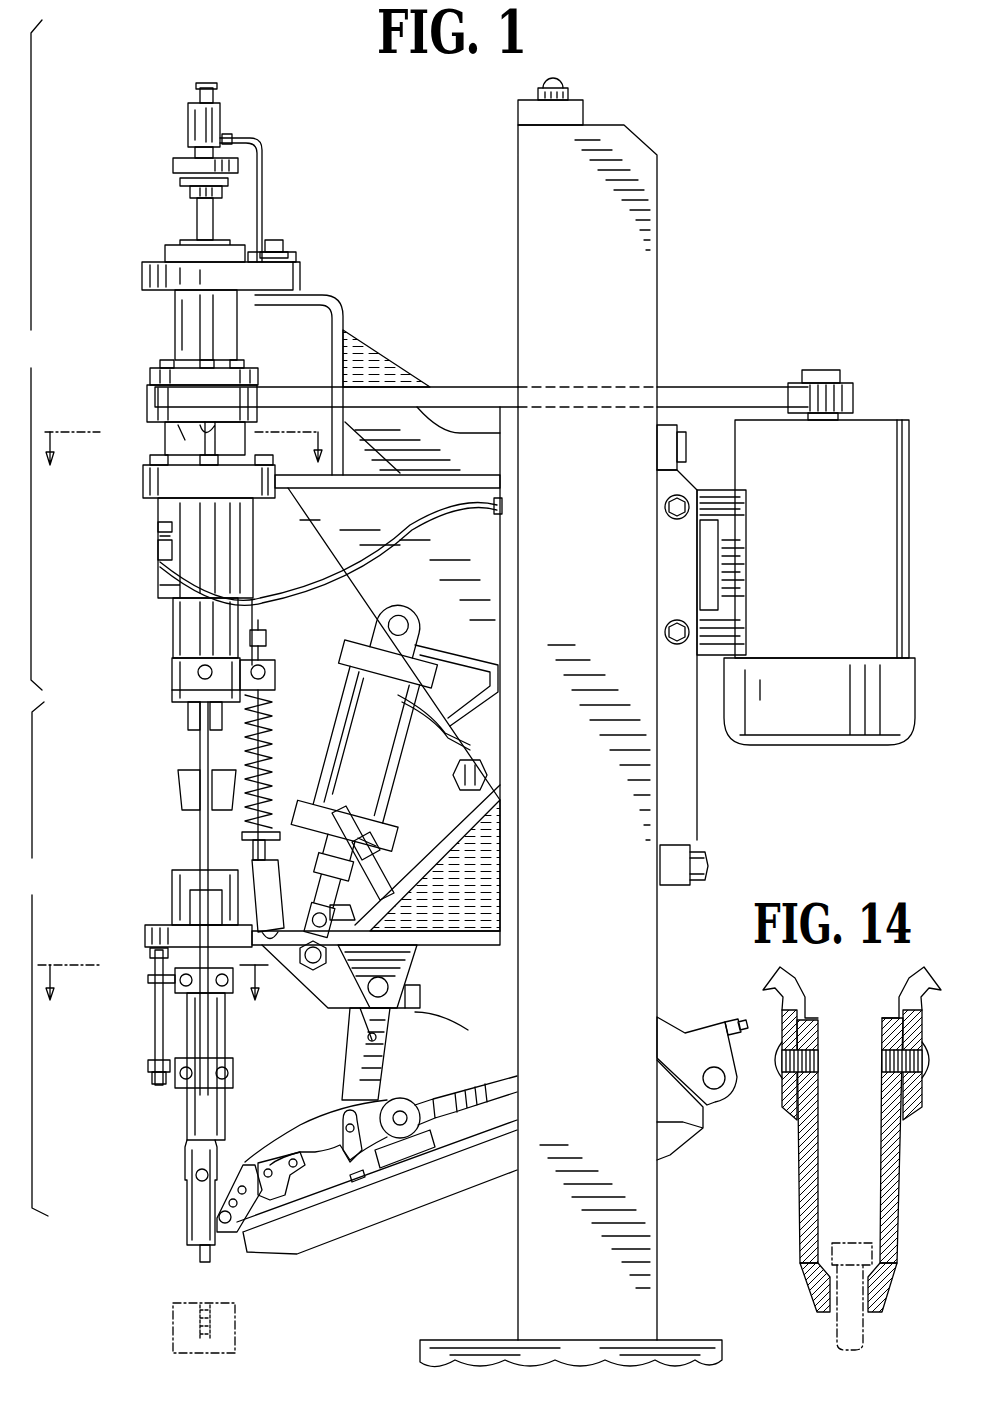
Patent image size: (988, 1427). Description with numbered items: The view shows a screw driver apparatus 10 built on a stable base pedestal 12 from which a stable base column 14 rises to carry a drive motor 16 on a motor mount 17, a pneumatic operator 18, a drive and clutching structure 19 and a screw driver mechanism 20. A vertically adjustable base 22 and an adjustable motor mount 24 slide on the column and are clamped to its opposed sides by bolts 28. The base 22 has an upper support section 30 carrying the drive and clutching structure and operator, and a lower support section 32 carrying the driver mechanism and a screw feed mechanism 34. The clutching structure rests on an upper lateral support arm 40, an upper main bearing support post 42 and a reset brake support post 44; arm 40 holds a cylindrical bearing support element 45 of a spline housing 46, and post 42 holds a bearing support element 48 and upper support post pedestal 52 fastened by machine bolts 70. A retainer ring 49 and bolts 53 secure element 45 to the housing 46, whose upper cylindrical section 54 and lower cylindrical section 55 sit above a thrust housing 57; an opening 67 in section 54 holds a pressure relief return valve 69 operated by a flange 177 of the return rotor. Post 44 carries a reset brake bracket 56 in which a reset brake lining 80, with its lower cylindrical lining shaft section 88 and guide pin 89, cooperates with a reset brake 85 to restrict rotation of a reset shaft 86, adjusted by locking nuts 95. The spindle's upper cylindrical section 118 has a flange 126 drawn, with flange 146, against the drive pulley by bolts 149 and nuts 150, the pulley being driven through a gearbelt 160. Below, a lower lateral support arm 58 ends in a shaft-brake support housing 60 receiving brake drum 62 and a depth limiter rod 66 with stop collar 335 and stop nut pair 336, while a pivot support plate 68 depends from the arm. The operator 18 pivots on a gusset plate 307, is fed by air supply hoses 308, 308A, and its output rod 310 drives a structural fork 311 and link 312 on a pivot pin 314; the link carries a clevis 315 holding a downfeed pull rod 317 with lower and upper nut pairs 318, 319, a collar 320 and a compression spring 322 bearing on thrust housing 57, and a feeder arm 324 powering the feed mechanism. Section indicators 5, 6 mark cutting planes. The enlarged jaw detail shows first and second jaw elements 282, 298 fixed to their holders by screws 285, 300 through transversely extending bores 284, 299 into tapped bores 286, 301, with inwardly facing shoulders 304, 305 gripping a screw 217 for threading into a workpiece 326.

In FIG. 1, the screw driver apparatus 10 is at (110, 72).
In FIG. 1, the stable base pedestal 12 is at (688, 1340).
In FIG. 1, the stable base column 14 is at (596, 965).
In FIG. 1, the drive motor 16 is at (824, 545).
In FIG. 1, the motor mount 17 is at (722, 500).
In FIG. 1, the pneumatic operator 18 is at (375, 729).
In FIG. 1, the drive and clutching structure 19 is at (29, 355).
In FIG. 1, the screw driver mechanism 20 is at (32, 959).
In FIG. 1, the vertically adjustable base 22 is at (505, 680).
In FIG. 1, the motor mount 24 is at (666, 668).
In FIG. 1, the bolts 28 is at (665, 428).
In FIG. 1, the upper support section 30 is at (472, 551).
In FIG. 1, the lower support section 32 is at (458, 870).
In FIG. 1, the screw feed mechanism 34 is at (416, 1082).
In FIG. 1, the upper lateral support arm 40 is at (400, 478).
In FIG. 1, the upper main bearing support post 42 is at (340, 316).
In FIG. 1, the reset brake support post 44 is at (265, 174).
In FIG. 1, the cylindrical bearing support element 45 is at (143, 480).
In FIG. 1, the spline housing 46 is at (156, 502).
In FIG. 1, the bearing support element 48 is at (295, 275).
In FIG. 1, the retainer ring 49 is at (160, 460).
In FIG. 1, the upper support post pedestal 52 is at (296, 260).
In FIG. 1, the bolts 53 is at (245, 462).
In FIG. 1, the upper cylindrical section 54 is at (240, 552).
In FIG. 1, the lower cylindrical section 55 is at (225, 617).
In FIG. 1, the reset brake bracket 56 is at (190, 118).
In FIG. 1, the thrust housing 57 is at (172, 673).
In FIG. 1, the lower lateral support arm 58 is at (490, 947).
In FIG. 1, the shaft-brake support housing 60 is at (148, 935).
In FIG. 1, the brake drum 62 is at (178, 794).
In FIG. 1, the depth limiter rod 66 is at (158, 1020).
In FIG. 1, the opening 67 is at (157, 528).
In FIG. 1, the pivot support plate 68 is at (405, 982).
In FIG. 1, the pressure relief return valve 69 is at (153, 555).
In FIG. 1, the machine bolts 70 is at (276, 240).
In FIG. 1, the reset brake lining 80 is at (170, 171).
In FIG. 1, the reset brake 85 is at (190, 190).
In FIG. 1, the reset shaft 86 is at (198, 222).
In FIG. 1, the lower cylindrical lining shaft section 88 is at (197, 157).
In FIG. 1, the guide pin 89 is at (232, 138).
In FIG. 1, the locking nuts 95 is at (210, 90).
In FIG. 1, the upper cylindrical section 118 is at (175, 330).
In FIG. 1, the flange 126 is at (258, 378).
In FIG. 1, the flange 146 is at (148, 405).
In FIG. 1, the bolts 149 is at (240, 368).
In FIG. 1, the nuts 150 is at (212, 440).
In FIG. 1, the gearbelt 160 is at (462, 387).
In FIG. 1, the flange 177 is at (153, 546).
In FIG. 1, the screw 217 is at (203, 1256).
In FIG. 14, the screw 217 is at (862, 1343).
In FIG. 14, the first jaw element 282 is at (805, 1240).
In FIG. 14, the transversely extending bore 284 is at (790, 1100).
In FIG. 14, the screw 285 is at (778, 1068).
In FIG. 14, the tapped bore 286 is at (818, 1060).
In FIG. 14, the second jaw element 298 is at (888, 1240).
In FIG. 14, the transversely extending bore 299 is at (914, 1082).
In FIG. 14, the screw 300 is at (928, 1062).
In FIG. 14, the tapped bore 301 is at (886, 1065).
In FIG. 14, the inwardly facing shoulder 304 is at (818, 1314).
In FIG. 14, the inwardly facing shoulder 305 is at (882, 1302).
In FIG. 1, the gusset plate 307 is at (478, 630).
In FIG. 1, the air supply hose 308 is at (385, 845).
In FIG. 1, the air supply hose 308A is at (442, 742).
In FIG. 1, the output rod 310 is at (370, 912).
In FIG. 1, the structural fork 311 is at (296, 982).
In FIG. 1, the link 312 is at (320, 972).
In FIG. 1, the pivot pin 314 is at (458, 1027).
In FIG. 1, the clevis 315 is at (272, 905).
In FIG. 1, the downfeed pull rod 317 is at (262, 722).
In FIG. 1, the lower nut pair 318 is at (268, 840).
In FIG. 1, the upper nut pair 319 is at (266, 640).
In FIG. 1, the collar 320 is at (268, 795).
In FIG. 1, the compression spring 322 is at (262, 705).
In FIG. 1, the feeder arm 324 is at (348, 1074).
In FIG. 1, the workpiece 326 is at (172, 1335).
In FIG. 1, the stop collar 335 is at (150, 980).
In FIG. 1, the stop nut pair 336 is at (148, 1066).
In FIG. 1, the section line 5- 5 is at (177, 453).
In FIG. 1, the section line 6- 6 is at (153, 994).